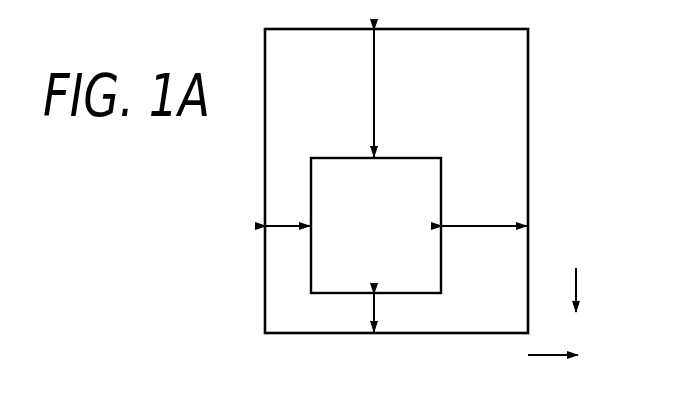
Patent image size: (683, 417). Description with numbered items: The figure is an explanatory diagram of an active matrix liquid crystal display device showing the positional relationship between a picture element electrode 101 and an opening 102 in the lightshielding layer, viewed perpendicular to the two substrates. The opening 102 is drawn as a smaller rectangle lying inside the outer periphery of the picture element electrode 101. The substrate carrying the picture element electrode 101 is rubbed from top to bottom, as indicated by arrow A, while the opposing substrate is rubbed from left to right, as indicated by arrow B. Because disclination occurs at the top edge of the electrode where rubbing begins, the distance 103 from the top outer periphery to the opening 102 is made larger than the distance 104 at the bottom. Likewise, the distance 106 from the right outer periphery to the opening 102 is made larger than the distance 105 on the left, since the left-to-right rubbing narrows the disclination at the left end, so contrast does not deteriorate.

The picture element electrode 101 is at (528, 45).
The opening 102 is at (425, 158).
The start side distance 103 is at (398, 93).
The end side distance 104 is at (402, 313).
The start side distance 105 is at (288, 207).
The end side distance 106 is at (484, 207).
The arrow A is at (576, 282).
The arrow B is at (548, 355).